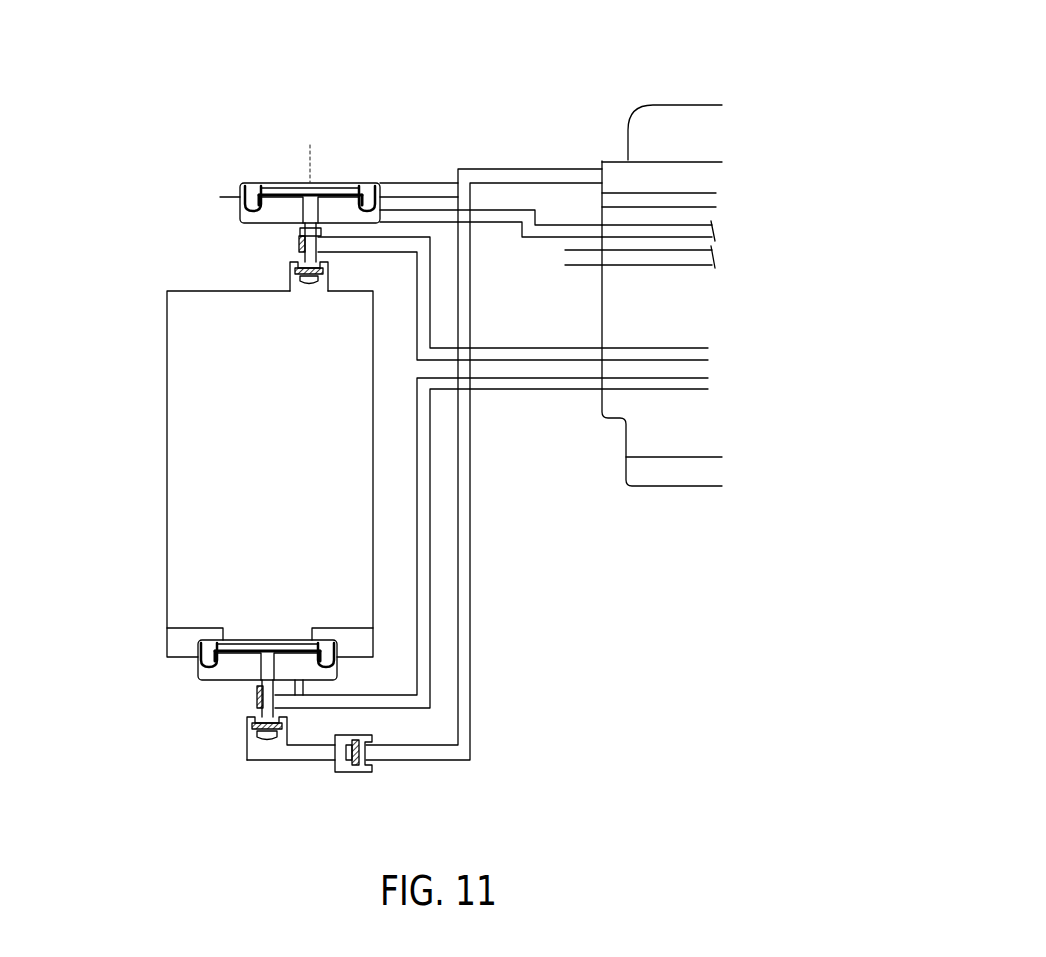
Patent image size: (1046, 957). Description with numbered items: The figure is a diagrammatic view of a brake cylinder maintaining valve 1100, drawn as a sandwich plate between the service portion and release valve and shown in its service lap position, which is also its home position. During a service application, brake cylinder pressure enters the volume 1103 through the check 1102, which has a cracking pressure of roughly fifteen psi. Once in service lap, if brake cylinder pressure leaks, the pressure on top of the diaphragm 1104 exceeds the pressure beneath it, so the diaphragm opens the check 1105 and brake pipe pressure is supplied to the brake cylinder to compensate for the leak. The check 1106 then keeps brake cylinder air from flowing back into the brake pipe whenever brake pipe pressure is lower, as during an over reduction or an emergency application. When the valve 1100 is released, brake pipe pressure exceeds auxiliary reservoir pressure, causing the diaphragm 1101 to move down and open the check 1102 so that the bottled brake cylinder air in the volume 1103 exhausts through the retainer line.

The brake maintaining valve 1100 is at (99, 66).
The diaphragm 1101 is at (245, 185).
The check 1102 is at (290, 274).
The volume 1103 is at (167, 425).
The diaphragm 1104 is at (270, 645).
The check 1105 is at (247, 727).
The check 1106 is at (370, 755).